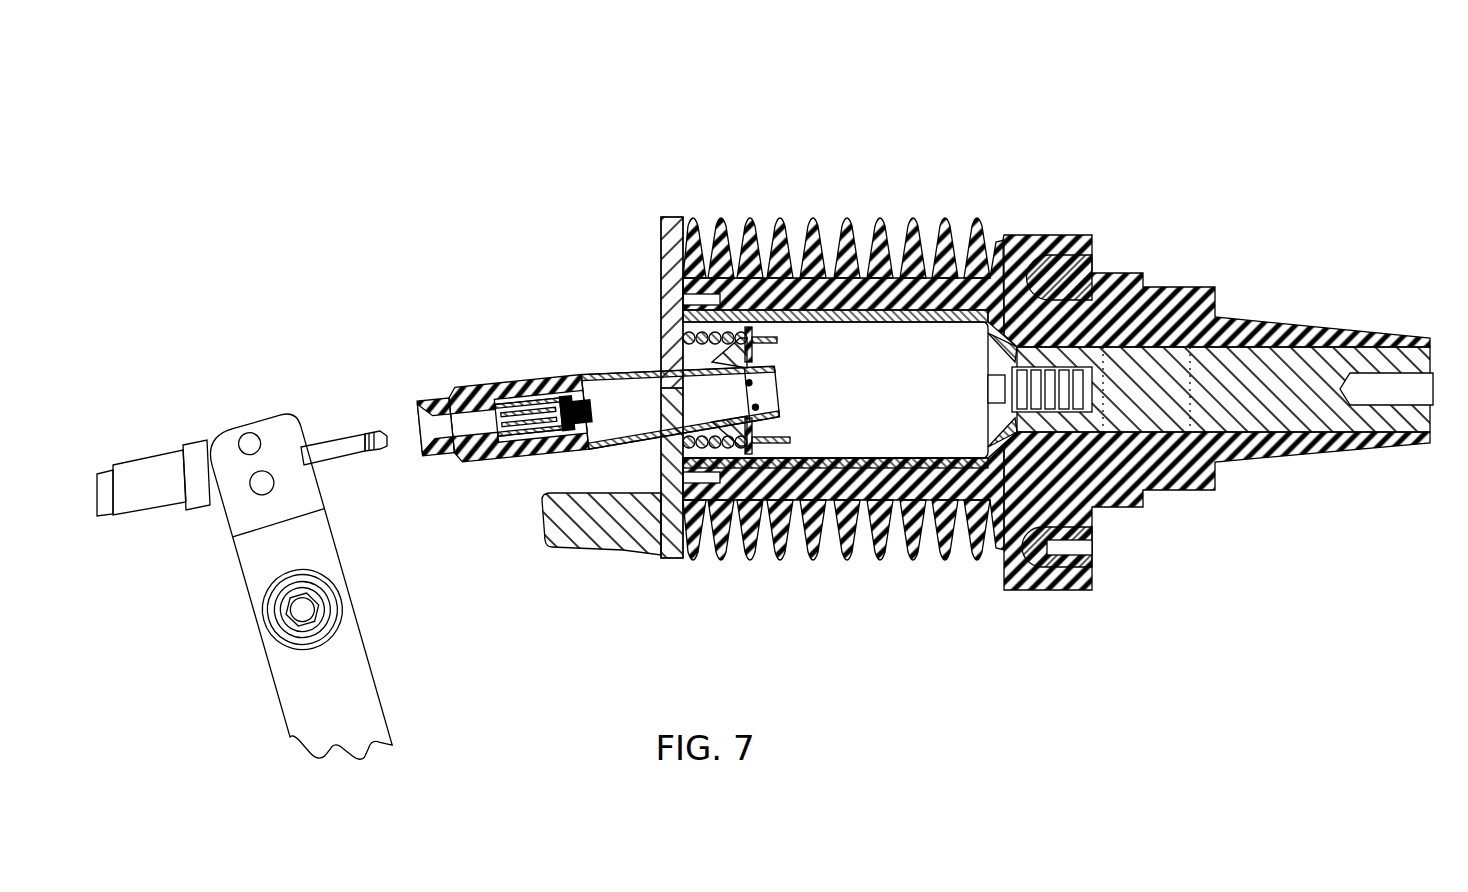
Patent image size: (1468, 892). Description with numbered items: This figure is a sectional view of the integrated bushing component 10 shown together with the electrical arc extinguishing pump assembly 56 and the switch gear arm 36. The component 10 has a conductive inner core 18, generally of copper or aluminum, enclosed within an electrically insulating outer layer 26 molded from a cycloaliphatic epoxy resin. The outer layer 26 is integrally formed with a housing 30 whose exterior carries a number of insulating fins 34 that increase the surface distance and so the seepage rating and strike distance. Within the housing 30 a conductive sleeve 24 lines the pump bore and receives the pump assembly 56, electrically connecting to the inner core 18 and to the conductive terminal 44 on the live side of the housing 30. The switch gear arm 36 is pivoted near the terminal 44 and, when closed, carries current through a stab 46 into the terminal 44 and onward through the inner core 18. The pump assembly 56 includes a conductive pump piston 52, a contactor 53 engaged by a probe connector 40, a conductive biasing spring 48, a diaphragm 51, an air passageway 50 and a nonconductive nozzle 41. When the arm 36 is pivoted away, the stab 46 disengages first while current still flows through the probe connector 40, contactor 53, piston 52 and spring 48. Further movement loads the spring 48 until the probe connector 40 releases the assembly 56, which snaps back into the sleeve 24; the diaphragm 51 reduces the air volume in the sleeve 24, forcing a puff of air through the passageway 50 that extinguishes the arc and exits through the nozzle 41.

The integrated bushing component 10 is at (1052, 150).
The inner core 18 is at (1270, 388).
The conductive sleeve 24 is at (933, 318).
The outer layer 26 is at (1173, 287).
The housing 30 is at (856, 368).
The fins 34 is at (783, 216).
The switch gear arm 36 is at (367, 695).
The probe connector 40 is at (375, 432).
The nozzle 41 is at (430, 472).
The terminal 44 is at (660, 242).
The stab 46 is at (590, 530).
The biasing spring 48 is at (723, 343).
The air passageway 50 is at (617, 396).
The diaphragm 51 is at (760, 467).
The pump piston 52 is at (683, 429).
The contactor 53 is at (521, 460).
The electrical arc extinguishing pump assembly 56 is at (497, 353).